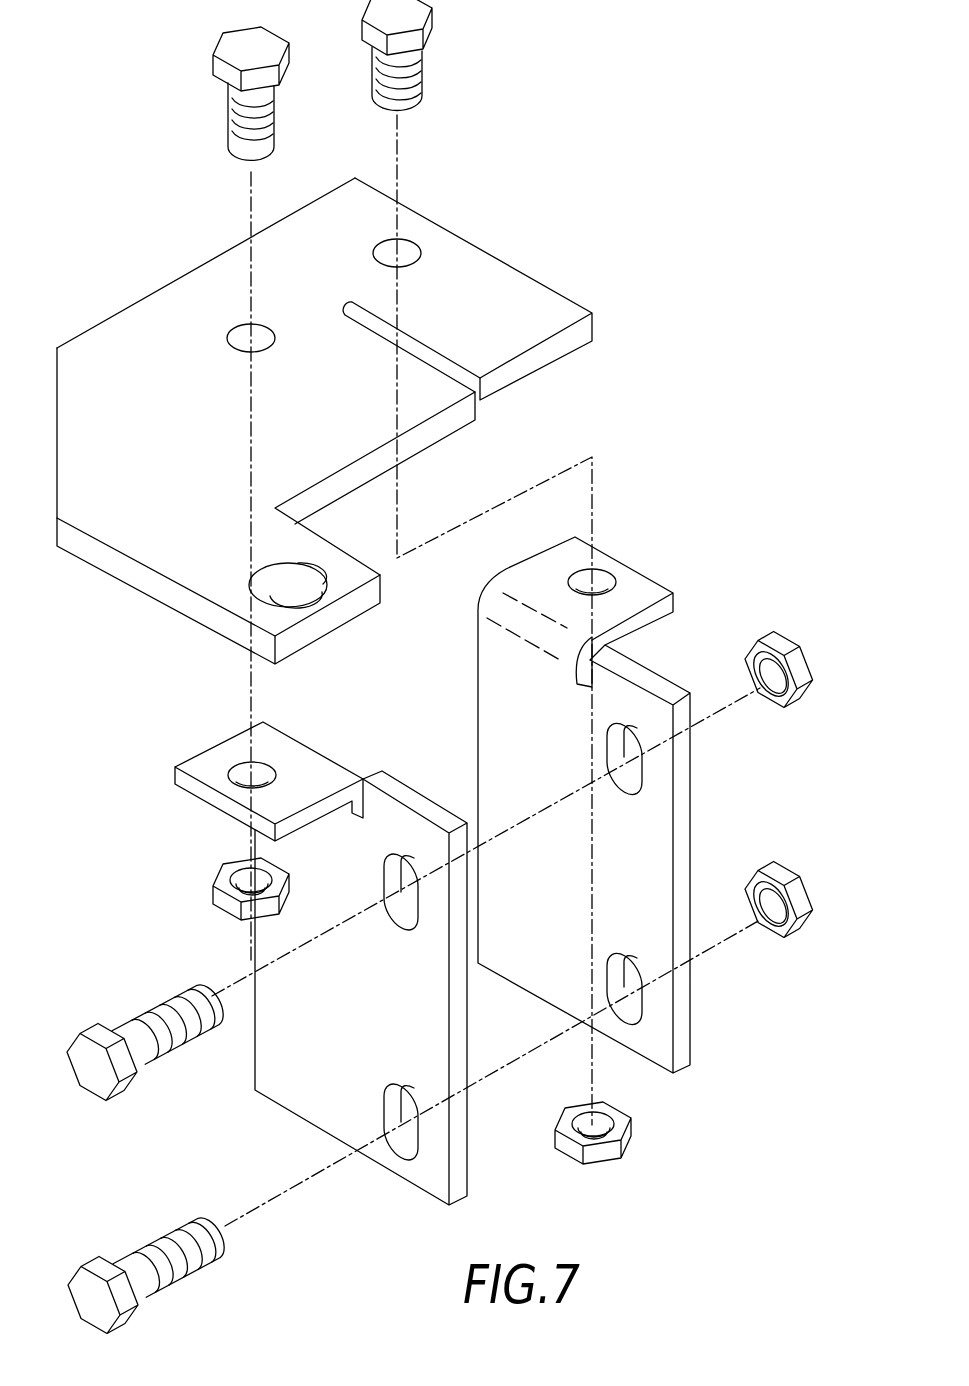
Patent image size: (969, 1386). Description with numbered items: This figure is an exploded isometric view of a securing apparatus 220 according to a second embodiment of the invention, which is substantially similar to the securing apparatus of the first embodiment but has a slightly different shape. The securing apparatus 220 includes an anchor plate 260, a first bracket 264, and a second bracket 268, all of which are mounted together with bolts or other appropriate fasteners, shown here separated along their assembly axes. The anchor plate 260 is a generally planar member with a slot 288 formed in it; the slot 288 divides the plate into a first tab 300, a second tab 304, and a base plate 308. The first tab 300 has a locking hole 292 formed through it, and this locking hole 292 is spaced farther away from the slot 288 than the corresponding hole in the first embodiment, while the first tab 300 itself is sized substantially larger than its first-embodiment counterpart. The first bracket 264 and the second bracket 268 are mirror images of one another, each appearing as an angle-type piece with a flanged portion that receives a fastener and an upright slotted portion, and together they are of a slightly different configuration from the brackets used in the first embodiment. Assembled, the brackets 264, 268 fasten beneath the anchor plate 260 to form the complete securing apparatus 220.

The securing apparatus 220 is at (442, 191).
The anchor plate 260 is at (486, 238).
The second tab 304 is at (567, 293).
The base plate 308 is at (140, 298).
The slot 288 is at (408, 344).
The locking hole 292 is at (314, 568).
The first tab 300 is at (115, 590).
The second bracket 268 is at (639, 550).
The first bracket 264 is at (168, 798).